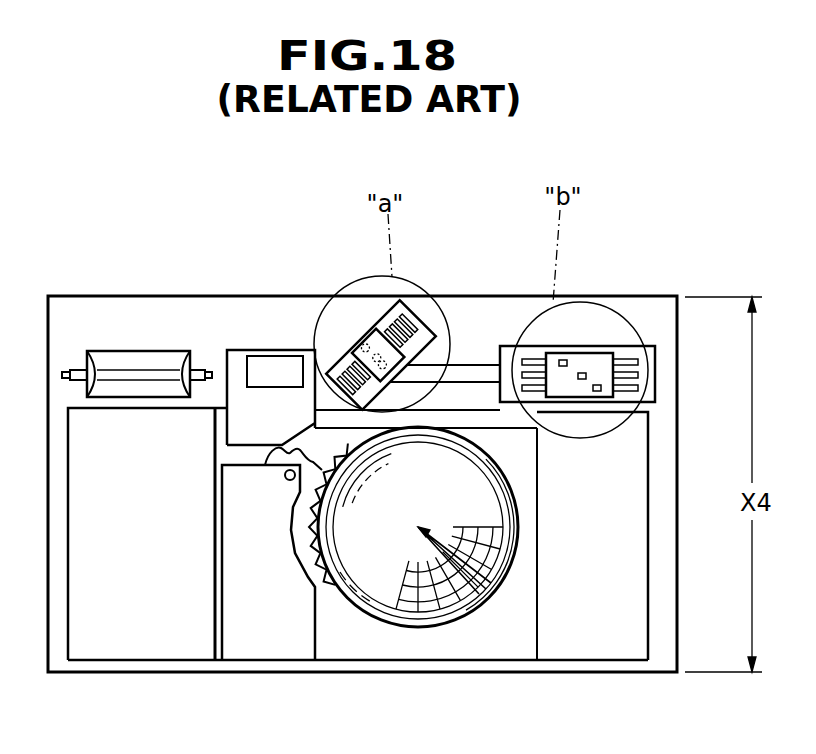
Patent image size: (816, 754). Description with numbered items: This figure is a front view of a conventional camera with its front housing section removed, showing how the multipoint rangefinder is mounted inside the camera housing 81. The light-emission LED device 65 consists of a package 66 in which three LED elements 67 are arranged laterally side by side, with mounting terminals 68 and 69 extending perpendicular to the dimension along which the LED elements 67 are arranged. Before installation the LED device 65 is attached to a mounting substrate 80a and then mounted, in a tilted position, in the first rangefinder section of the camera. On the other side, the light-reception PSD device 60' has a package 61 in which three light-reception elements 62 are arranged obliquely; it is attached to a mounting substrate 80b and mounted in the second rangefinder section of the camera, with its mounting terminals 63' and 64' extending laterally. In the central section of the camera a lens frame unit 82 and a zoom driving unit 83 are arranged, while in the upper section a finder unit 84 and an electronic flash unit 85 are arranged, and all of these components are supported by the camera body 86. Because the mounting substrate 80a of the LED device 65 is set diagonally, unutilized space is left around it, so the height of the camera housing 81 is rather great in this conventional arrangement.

The light-reception PSD device 60' is at (608, 297).
The package 61 is at (637, 326).
The light-reception elements 62 is at (567, 358).
The mounting terminal 63' is at (674, 387).
The mounting terminal 64' is at (629, 423).
The light-emission LED device 65 is at (378, 355).
The package 66 is at (427, 366).
The LED elements 67 is at (333, 297).
The mounting terminal 68 is at (381, 355).
The mounting terminal 69 is at (353, 377).
The mounting substrate 80a is at (411, 326).
The mounting substrate 80b is at (620, 342).
The camera housing 81 is at (518, 295).
The lens frame unit 82 is at (387, 582).
The zoom driving unit 83 is at (297, 647).
The finder unit 84 is at (237, 373).
The electronic flash unit 85 is at (115, 357).
The camera body 86 is at (602, 643).